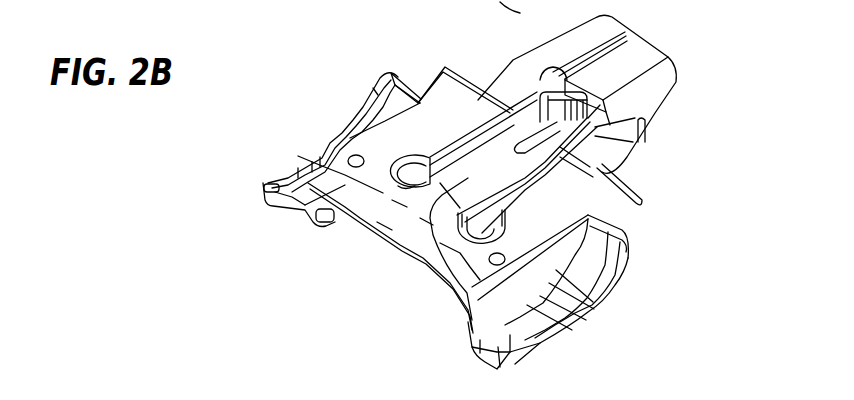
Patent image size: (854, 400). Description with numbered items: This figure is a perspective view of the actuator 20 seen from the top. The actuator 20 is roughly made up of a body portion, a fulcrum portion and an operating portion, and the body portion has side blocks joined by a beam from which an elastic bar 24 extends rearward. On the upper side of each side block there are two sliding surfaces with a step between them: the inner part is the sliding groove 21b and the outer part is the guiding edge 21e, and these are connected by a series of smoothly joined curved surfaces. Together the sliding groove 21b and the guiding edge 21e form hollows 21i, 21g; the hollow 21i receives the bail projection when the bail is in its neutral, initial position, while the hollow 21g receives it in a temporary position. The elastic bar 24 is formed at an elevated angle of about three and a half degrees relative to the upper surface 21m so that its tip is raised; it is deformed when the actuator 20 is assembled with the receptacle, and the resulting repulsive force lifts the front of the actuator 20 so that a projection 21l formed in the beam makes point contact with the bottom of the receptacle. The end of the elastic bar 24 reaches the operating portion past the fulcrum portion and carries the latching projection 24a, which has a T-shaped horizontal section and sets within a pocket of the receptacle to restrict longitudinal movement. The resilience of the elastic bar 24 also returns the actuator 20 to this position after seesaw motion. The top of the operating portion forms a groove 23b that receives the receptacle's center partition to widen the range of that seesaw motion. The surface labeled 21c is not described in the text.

The actuator 20 is at (692, 280).
The sliding groove 21b is at (398, 94).
The front rim 21c is at (397, 246).
The guiding edge 21e is at (328, 147).
The hollow 21g is at (538, 334).
The hollow 21i is at (473, 343).
The projection 21l is at (352, 168).
The upper surface 21m is at (441, 90).
The groove 23b is at (632, 57).
The elastic bar 24 is at (447, 240).
The latching projection 24a is at (512, 76).